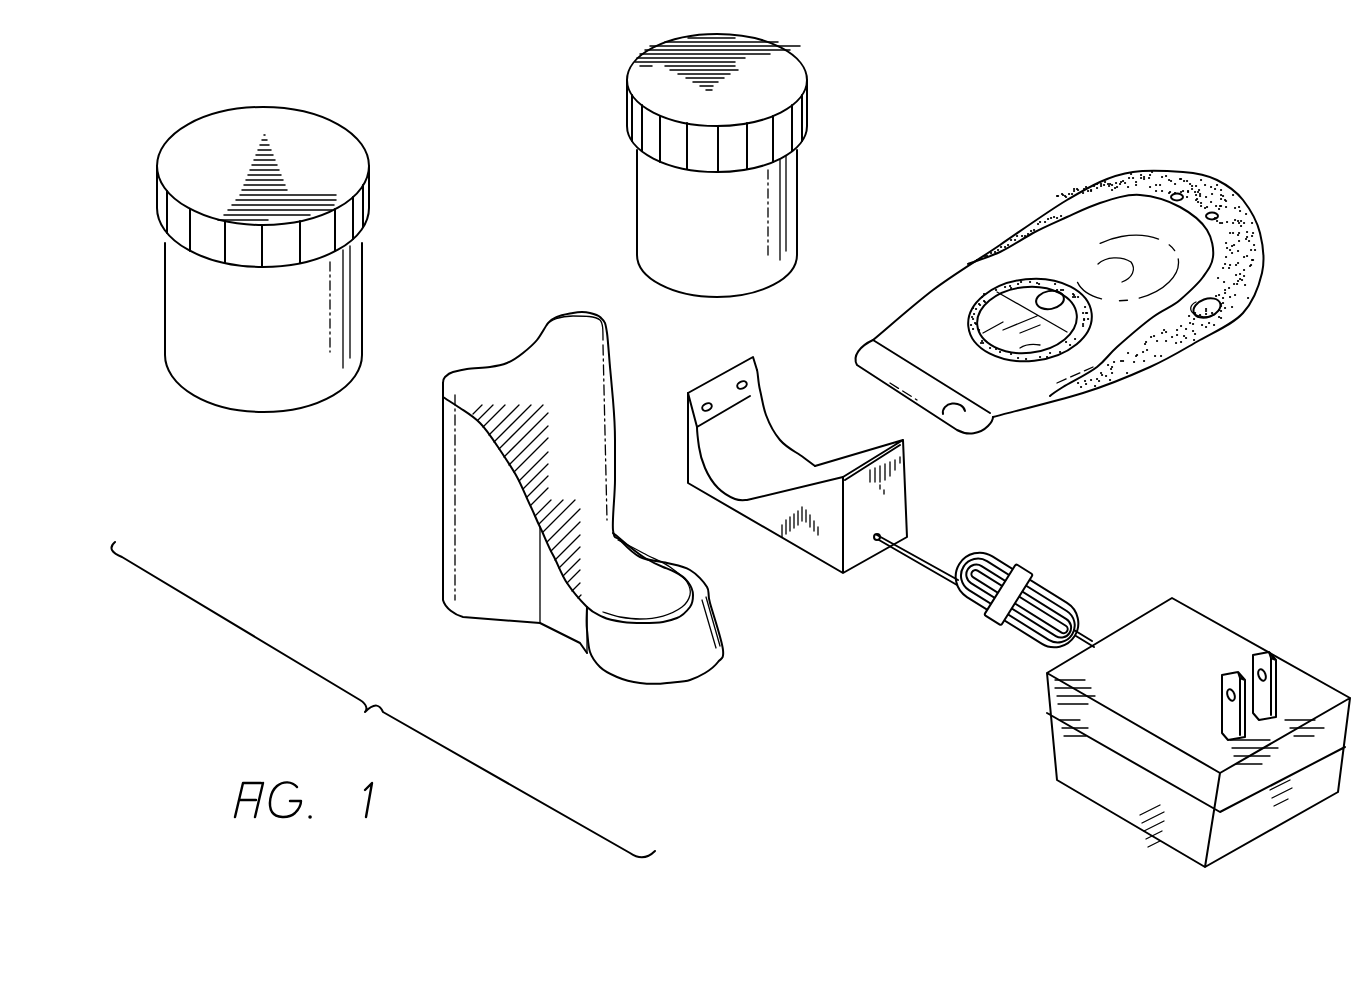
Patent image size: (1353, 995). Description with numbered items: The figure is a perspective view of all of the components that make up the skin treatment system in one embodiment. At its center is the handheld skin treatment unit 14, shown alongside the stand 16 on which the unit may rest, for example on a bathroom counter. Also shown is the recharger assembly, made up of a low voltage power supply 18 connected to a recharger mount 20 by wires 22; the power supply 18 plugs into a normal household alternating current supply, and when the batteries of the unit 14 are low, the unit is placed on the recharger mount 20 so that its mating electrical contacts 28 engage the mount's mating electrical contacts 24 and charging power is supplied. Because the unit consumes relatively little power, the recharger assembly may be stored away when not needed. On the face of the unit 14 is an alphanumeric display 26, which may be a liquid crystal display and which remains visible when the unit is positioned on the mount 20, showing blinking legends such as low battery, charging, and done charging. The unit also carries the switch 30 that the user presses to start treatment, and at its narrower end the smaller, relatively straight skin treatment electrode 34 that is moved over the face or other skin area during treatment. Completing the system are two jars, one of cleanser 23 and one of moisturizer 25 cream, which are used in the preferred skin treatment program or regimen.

The handheld skin treatment unit 14 is at (1088, 296).
The stand 16 is at (582, 478).
The low voltage power supply 18 is at (1188, 647).
The recharger mount 20 is at (771, 465).
The wires 22 is at (1000, 560).
The cleanser 23 is at (263, 259).
The mating electrical contacts 24 is at (709, 404).
The moisturizer container 25 is at (717, 165).
The alphanumeric display 26 is at (1021, 352).
The mating electrical contacts 28 is at (1177, 193).
The switch 30 is at (1048, 293).
The skin treatment electrode 34 is at (945, 414).